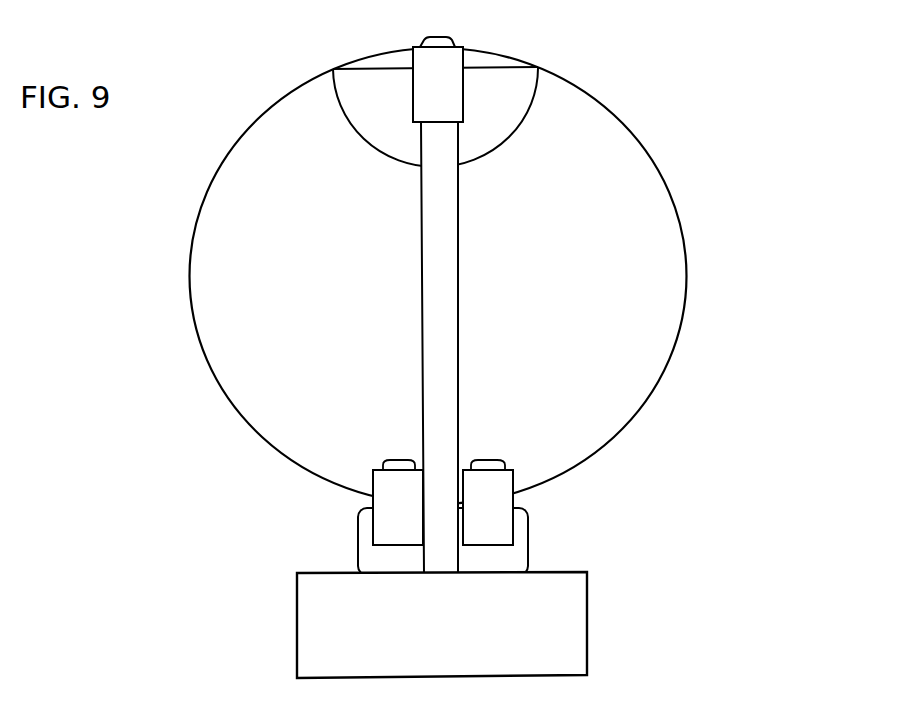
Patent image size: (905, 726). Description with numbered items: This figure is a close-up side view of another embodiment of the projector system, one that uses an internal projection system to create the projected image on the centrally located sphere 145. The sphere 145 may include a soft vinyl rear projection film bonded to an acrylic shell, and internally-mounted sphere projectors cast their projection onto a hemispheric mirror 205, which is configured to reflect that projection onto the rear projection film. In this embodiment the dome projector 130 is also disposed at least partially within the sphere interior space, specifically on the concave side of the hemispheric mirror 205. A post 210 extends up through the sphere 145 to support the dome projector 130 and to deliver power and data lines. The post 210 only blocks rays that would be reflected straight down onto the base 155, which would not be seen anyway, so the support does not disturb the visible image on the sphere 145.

The dome projector 130 is at (465, 82).
The centrally located sphere 145 is at (664, 365).
The base 155 is at (588, 598).
The hemispheric mirror 205 is at (520, 133).
The post 210 is at (458, 253).